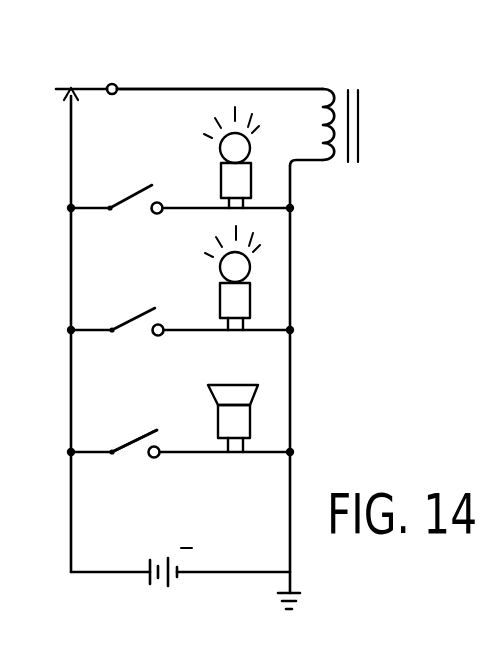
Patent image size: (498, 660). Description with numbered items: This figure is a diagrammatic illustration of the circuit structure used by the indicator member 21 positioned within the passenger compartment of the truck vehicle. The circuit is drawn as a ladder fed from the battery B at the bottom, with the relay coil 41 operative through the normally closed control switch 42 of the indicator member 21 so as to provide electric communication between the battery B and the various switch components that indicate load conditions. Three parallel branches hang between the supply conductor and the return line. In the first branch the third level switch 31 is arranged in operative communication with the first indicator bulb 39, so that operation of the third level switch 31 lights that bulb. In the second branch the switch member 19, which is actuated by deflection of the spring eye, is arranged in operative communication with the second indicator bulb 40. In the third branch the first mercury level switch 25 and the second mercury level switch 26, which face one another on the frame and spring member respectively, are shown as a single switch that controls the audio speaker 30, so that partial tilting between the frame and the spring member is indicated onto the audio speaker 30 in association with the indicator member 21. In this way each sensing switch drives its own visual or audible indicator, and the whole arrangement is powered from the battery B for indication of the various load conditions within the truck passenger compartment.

The normally closed control switch 42 is at (92, 86).
The indicator member 21 is at (254, 89).
The relay coil 41 is at (328, 88).
The third level switch 31 is at (132, 197).
The first indicator bulb 39 is at (232, 181).
The switch member 19 is at (135, 320).
The second indicator bulb 40 is at (230, 302).
The first mercury level switch 25 is at (130, 440).
The second mercury level switch 26 is at (134, 441).
The audio speaker 30 is at (240, 422).
The battery B is at (148, 580).